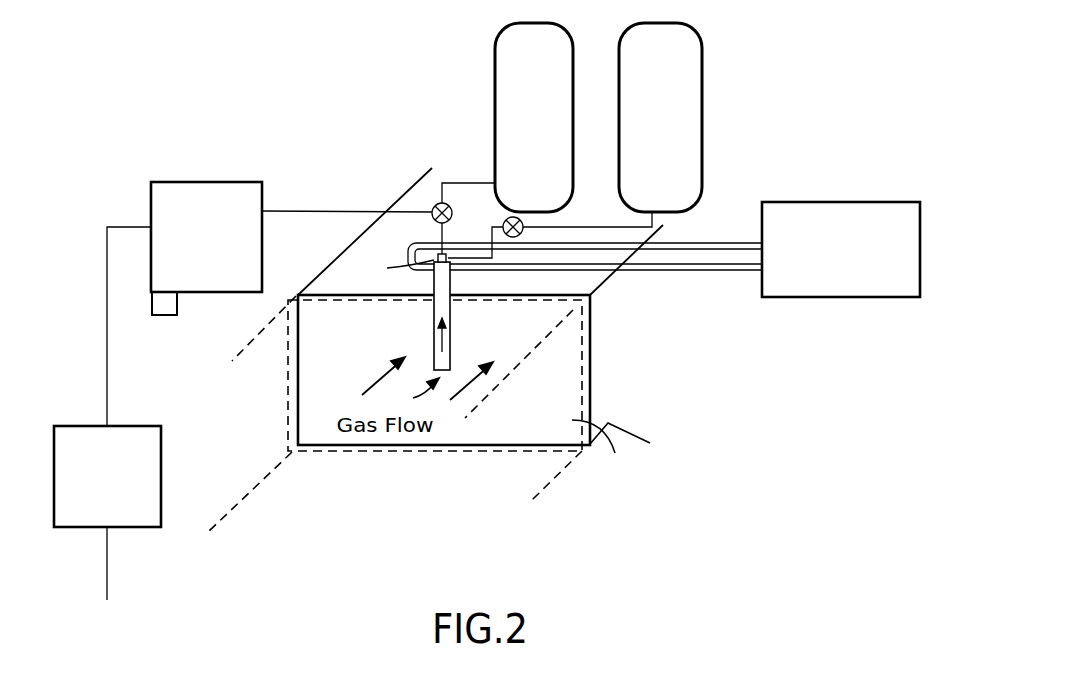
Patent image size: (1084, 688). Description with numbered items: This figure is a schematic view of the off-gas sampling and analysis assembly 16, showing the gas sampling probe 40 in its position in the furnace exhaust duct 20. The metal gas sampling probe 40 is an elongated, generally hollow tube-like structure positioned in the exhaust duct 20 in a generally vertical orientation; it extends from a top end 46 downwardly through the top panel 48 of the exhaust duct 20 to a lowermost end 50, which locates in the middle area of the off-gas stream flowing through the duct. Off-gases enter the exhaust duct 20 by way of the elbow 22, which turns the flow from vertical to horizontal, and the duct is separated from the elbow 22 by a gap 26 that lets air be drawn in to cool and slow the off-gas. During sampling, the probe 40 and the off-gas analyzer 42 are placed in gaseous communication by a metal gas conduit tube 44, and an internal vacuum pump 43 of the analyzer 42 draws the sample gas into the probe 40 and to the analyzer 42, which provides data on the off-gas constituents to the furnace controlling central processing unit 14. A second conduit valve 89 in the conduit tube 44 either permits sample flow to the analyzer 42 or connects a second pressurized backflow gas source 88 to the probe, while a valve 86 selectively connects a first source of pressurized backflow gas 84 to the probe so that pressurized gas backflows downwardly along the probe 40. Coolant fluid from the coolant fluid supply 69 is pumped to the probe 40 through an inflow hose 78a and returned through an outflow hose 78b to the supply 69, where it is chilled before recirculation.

The off-gas sampling and analysis assembly 16 is at (246, 128).
The furnace controlling central processing unit 14 is at (107, 413).
The off-gas analyzer 42 is at (206, 237).
The internal vacuum pump 43 is at (157, 316).
The metal gas conduit tube 44 is at (335, 211).
The second conduit valve 89 is at (441, 203).
The valve 86 is at (505, 220).
The second pressurized backflow gas source 88 is at (544, 97).
The first source of pressurized backflow gas 84 is at (671, 97).
The coolant fluid supply 69 is at (868, 254).
The inflow hose 78a is at (712, 242).
The outflow hose 78b is at (700, 271).
The exhaust duct 20 is at (661, 311).
The top panel 48 is at (335, 268).
The elbow 22 is at (229, 406).
The gap 26 is at (611, 453).
The metal gas sampling probe 40 is at (452, 338).
The top end 46 is at (391, 272).
The lowermost end 50 is at (434, 370).